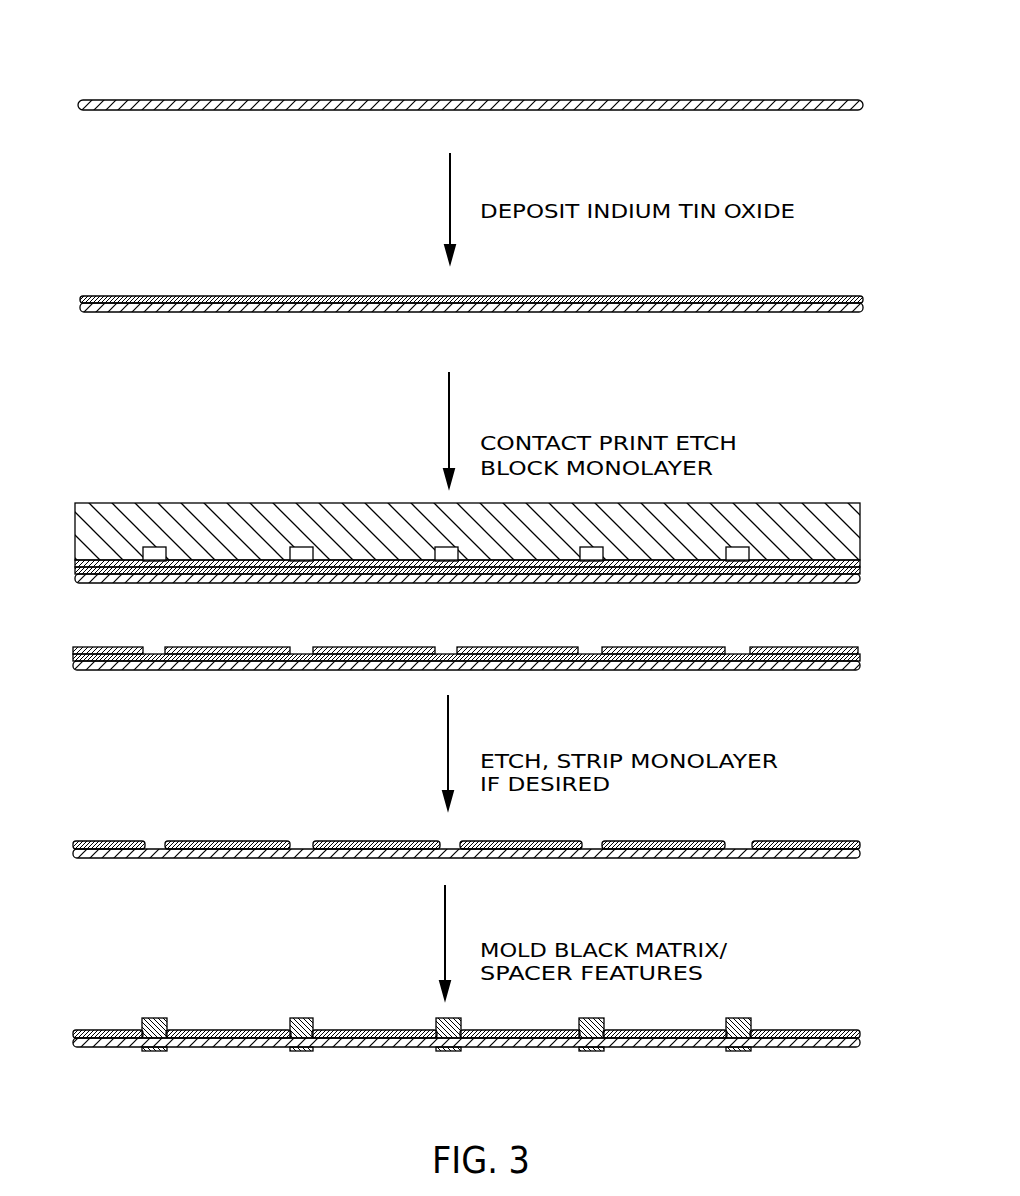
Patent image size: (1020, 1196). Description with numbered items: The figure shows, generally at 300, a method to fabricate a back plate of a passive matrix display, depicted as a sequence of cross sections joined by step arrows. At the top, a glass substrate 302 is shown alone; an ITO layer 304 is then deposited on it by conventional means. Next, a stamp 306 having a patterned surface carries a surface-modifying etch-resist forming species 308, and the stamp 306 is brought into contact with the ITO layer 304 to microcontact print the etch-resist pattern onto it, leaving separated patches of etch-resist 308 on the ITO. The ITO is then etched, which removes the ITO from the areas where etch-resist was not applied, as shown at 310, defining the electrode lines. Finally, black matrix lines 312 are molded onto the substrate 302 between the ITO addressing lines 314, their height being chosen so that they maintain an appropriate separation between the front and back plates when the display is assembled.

The method to fabricate a back plate of a passive matrix display 300 is at (551, 40).
The glass substrate 302 is at (356, 99).
The ITO layer 304 is at (542, 295).
The stamp 306 is at (861, 536).
The surface-modifying etch-resist forming species 308 is at (101, 646).
The etched ITO areas 310 is at (152, 841).
The black matrix lines 312 is at (158, 1018).
The ITO addressing lines 314 is at (668, 841).